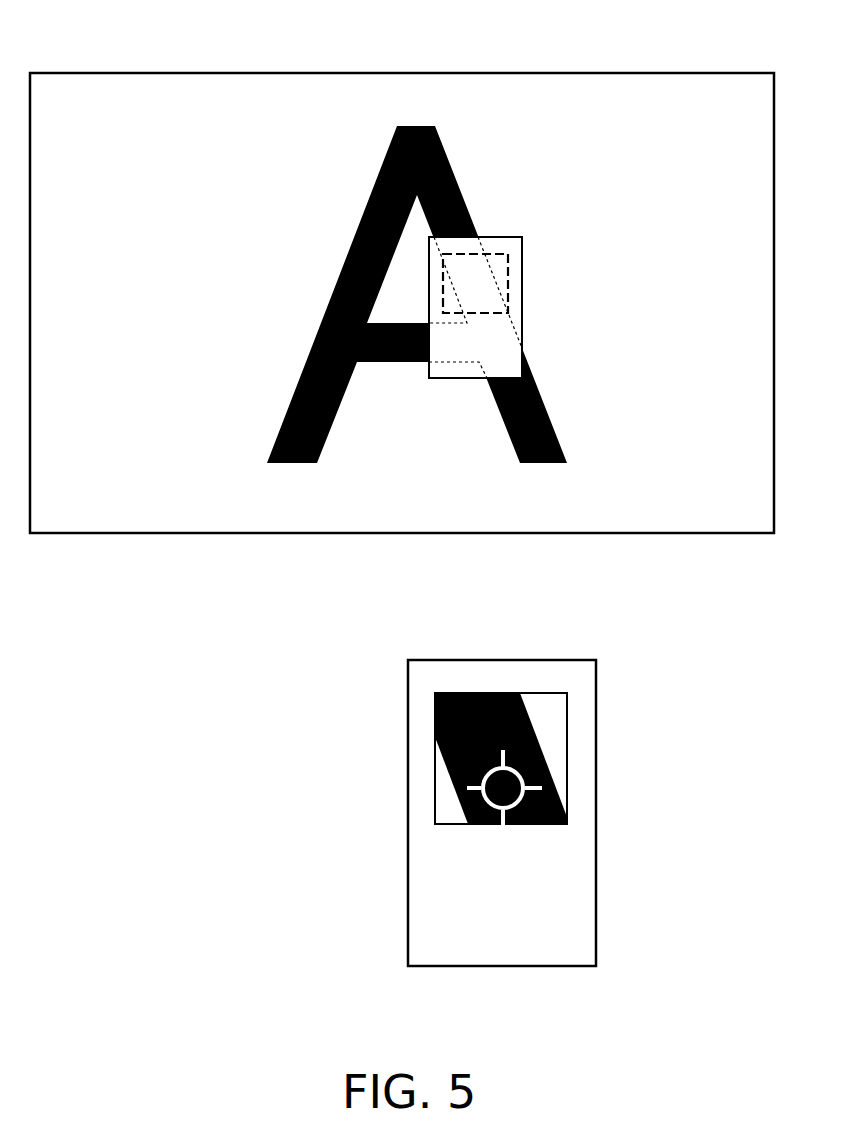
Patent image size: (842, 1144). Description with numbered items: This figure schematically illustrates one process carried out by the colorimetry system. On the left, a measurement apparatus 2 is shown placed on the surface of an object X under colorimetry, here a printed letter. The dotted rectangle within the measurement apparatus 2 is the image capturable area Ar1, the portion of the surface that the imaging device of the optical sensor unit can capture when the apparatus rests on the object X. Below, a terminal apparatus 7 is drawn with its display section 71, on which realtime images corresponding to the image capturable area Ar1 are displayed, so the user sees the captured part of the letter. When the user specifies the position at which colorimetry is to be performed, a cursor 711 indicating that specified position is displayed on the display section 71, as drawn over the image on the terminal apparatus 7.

The object under colorimetry X is at (488, 106).
The measurement apparatus 2 is at (522, 252).
The image capturable area Ar1 is at (508, 280).
The terminal apparatus 7 is at (596, 922).
The display section 71 is at (567, 715).
The cursor 711 is at (523, 774).